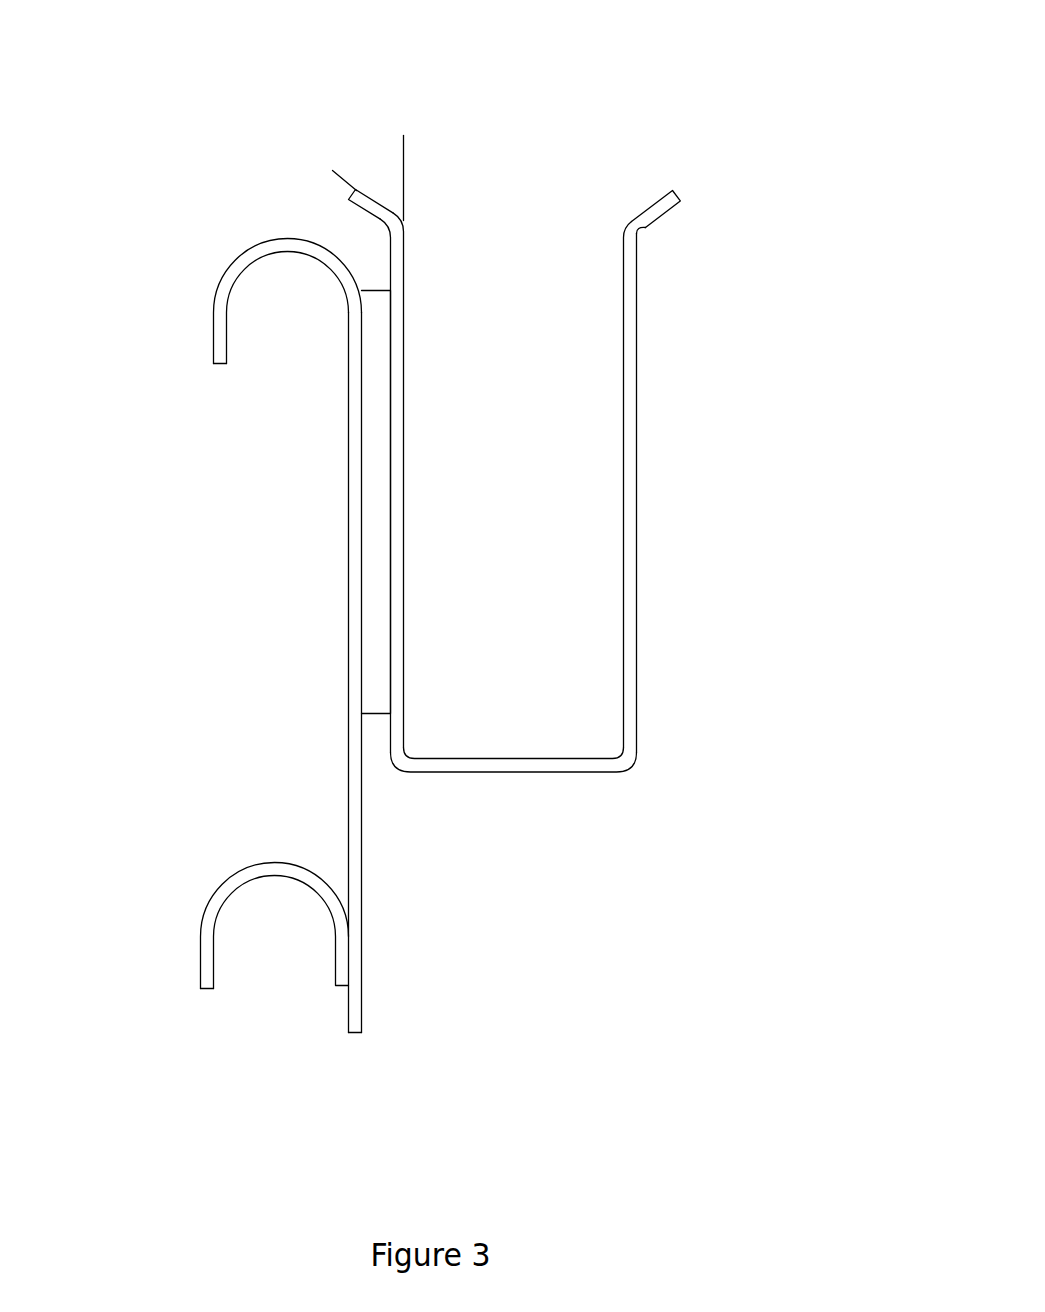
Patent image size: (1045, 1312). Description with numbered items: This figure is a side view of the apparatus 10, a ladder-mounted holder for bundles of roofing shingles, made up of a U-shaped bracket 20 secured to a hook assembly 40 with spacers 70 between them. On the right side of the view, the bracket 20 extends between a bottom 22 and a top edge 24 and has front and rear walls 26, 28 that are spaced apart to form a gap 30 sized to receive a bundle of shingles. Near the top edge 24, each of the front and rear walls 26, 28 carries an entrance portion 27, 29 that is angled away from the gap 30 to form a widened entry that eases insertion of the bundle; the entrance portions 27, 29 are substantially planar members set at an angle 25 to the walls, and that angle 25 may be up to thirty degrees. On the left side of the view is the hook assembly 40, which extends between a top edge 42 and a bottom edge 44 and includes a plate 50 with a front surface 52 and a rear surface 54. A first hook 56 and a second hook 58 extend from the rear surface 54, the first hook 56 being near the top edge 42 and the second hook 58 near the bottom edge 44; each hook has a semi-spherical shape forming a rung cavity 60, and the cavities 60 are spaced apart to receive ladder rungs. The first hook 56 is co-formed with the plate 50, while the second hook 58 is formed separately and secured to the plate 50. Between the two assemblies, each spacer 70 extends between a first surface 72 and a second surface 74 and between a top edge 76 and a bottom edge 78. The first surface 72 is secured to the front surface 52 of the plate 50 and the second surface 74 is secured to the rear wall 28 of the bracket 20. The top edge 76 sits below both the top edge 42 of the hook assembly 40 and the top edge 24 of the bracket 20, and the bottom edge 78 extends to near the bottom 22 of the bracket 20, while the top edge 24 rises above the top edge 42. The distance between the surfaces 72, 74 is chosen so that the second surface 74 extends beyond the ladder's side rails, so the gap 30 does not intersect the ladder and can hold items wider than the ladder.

The apparatus 10 is at (635, 72).
The U-shaped bracket 20 is at (636, 457).
The bottom 22 is at (617, 772).
The top edge 24 is at (673, 190).
The angle 25 is at (403, 143).
The front wall 26 is at (636, 500).
The entrance portion 27 is at (643, 205).
The rear wall 28 is at (404, 280).
The entrance portion 29 is at (353, 200).
The gap 30 is at (522, 232).
The hook assembly 40 is at (213, 310).
The top edge 42 is at (287, 238).
The bottom edge 44 is at (354, 1037).
The plate 50 is at (348, 578).
The front surface 52 is at (380, 893).
The rear surface 54 is at (340, 787).
The first hook 56 is at (213, 336).
The second hook 58 is at (200, 962).
The rung cavity 60 is at (278, 338).
The spacer 70 is at (378, 435).
The first surface 72 is at (348, 510).
The second surface 74 is at (402, 675).
The top edge 76 is at (378, 288).
The bottom edge 78 is at (375, 713).